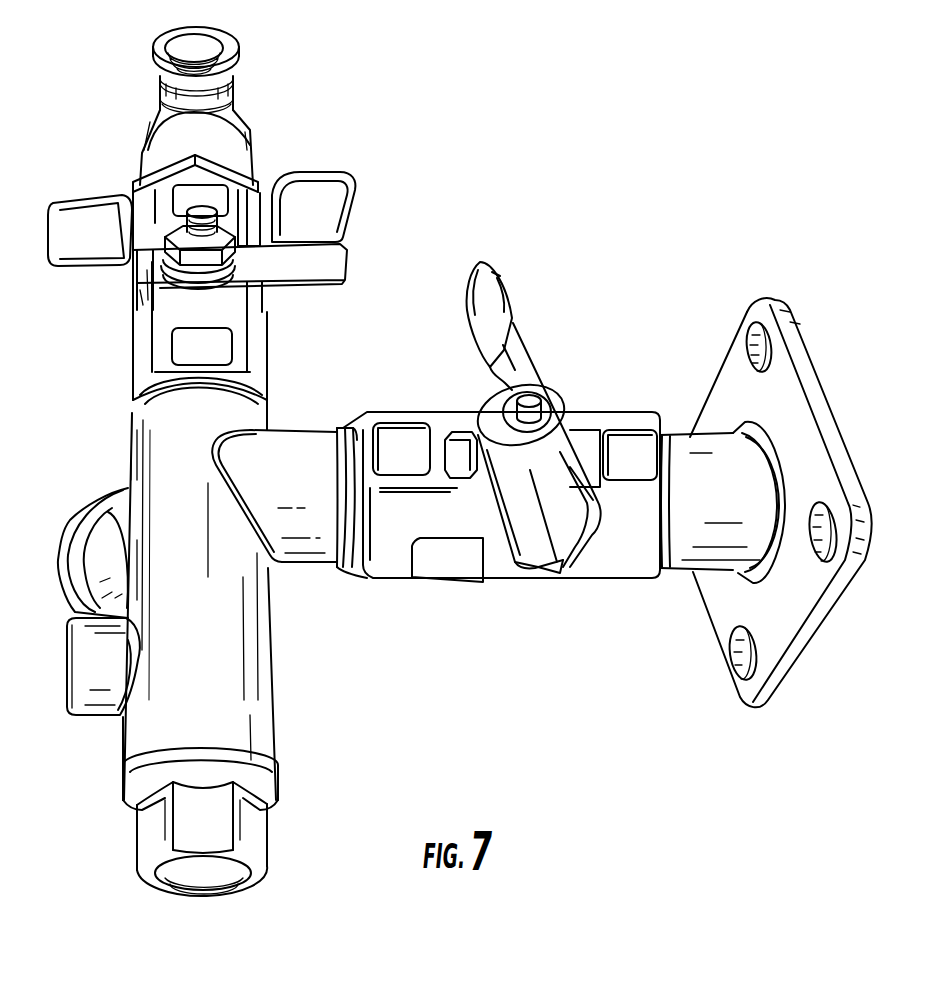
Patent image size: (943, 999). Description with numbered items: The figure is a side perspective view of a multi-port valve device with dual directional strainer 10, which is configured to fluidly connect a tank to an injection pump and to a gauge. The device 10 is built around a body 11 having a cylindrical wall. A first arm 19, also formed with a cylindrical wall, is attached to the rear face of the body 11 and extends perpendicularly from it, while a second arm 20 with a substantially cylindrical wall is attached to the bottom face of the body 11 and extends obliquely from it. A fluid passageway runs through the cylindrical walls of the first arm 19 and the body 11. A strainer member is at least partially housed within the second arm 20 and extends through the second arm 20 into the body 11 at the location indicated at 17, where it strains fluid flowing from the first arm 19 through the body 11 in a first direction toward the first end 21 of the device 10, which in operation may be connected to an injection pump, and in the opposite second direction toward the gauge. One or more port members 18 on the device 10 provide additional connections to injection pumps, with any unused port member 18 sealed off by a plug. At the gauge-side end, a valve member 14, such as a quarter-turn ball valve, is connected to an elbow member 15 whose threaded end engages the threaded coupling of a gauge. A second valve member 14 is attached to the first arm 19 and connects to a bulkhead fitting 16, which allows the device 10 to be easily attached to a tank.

The multi-port valve device with dual directional strainer 10 is at (110, 481).
The body 11 is at (230, 610).
The valve member 14 is at (160, 293).
The elbow member 15 is at (237, 128).
The bulkhead fitting 16 is at (733, 453).
The location where the strainer member extends into the body 17 is at (167, 510).
The port member 18 is at (103, 700).
The first arm 19 is at (302, 453).
The second arm 20 is at (108, 527).
The first end 21 is at (170, 905).